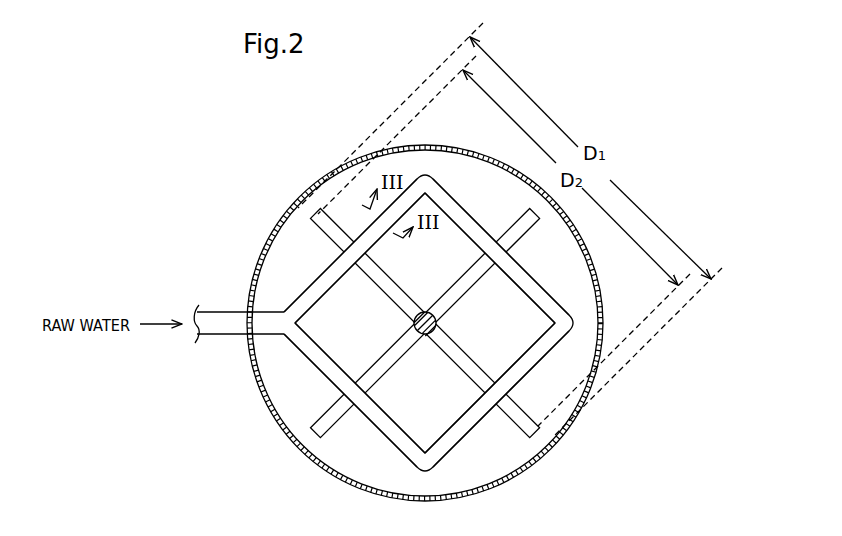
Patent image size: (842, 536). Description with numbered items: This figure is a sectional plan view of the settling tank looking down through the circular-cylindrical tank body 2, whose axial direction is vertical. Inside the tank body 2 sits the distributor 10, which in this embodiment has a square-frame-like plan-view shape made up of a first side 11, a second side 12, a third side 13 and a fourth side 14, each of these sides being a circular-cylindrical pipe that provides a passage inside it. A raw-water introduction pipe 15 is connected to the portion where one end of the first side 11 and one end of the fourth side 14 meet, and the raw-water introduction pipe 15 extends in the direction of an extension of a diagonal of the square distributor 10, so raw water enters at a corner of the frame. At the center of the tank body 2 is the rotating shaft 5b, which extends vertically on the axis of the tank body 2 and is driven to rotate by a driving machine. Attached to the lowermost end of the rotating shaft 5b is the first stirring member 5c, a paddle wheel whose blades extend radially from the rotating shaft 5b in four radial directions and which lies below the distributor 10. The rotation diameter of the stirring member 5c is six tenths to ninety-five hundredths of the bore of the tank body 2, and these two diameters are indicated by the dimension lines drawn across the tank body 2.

The tank body 2 is at (297, 449).
The rotating shaft 5b is at (411, 321).
The first stirring member 5c is at (392, 272).
The distributor 10 is at (312, 249).
The first side 11 is at (313, 283).
The second side 12 is at (470, 213).
The third side 13 is at (481, 421).
The fourth side 14 is at (310, 361).
The raw-water introduction pipe 15 is at (224, 336).